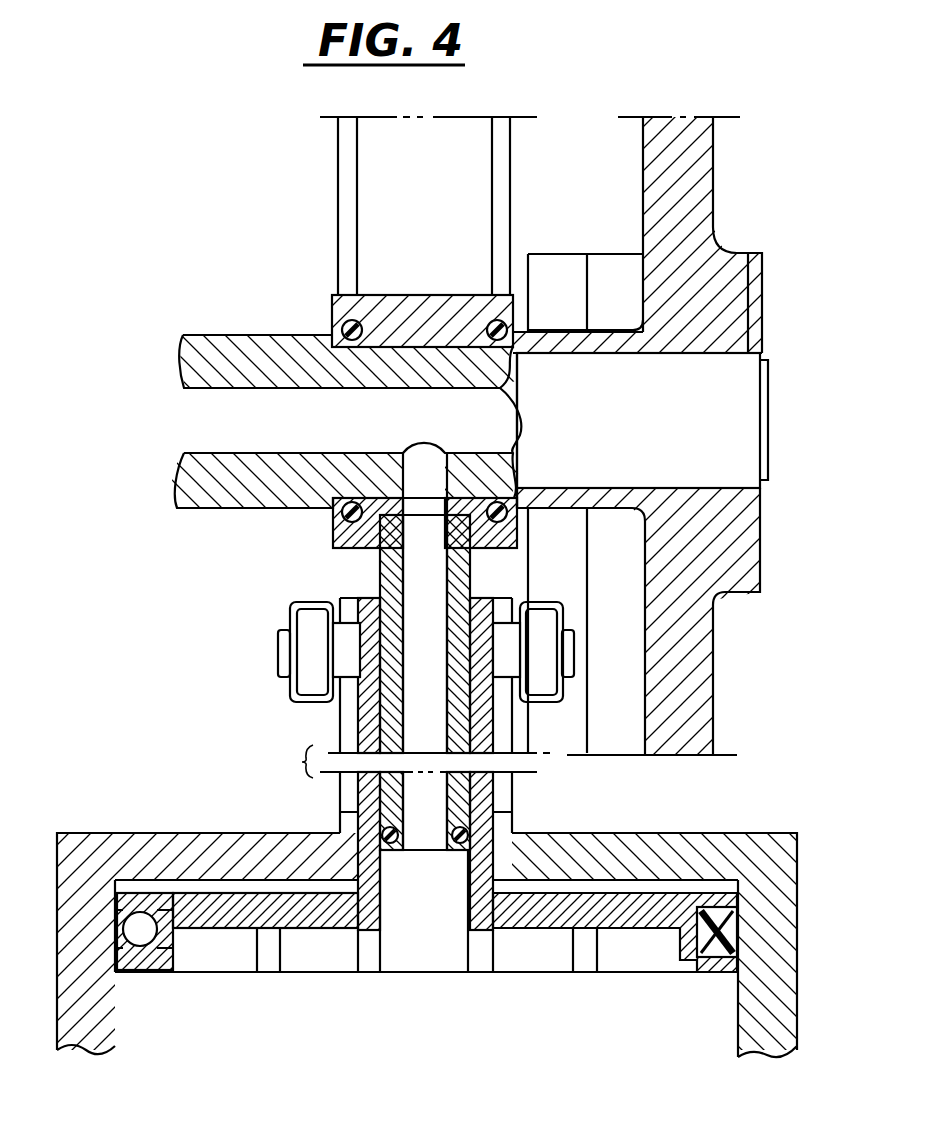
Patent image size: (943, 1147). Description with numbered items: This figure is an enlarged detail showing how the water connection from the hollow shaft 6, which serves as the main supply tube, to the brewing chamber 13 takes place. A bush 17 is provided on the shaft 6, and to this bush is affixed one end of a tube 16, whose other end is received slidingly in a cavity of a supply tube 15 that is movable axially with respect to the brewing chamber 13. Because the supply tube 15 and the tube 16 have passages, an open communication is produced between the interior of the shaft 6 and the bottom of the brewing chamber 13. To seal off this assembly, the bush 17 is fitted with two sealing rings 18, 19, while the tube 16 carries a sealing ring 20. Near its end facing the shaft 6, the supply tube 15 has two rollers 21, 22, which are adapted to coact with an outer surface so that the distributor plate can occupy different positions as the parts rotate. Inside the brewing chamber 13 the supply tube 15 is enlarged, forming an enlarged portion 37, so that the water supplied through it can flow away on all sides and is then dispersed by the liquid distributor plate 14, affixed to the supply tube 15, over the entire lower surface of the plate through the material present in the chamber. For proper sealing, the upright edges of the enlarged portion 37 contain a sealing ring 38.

The hollow shaft 6 is at (232, 350).
The brewing chamber 13 is at (737, 988).
The liquid distributor plate 14 is at (228, 970).
The supply tube 15 is at (372, 715).
The tube 16 is at (388, 556).
The bush 17 is at (377, 308).
The sealing ring 18 is at (343, 327).
The sealing ring 19 is at (481, 300).
The sealing ring 20 is at (362, 828).
The roller 21 is at (540, 690).
The roller 22 is at (306, 614).
The enlarged portion 37 is at (627, 920).
The sealing ring 38 is at (739, 920).